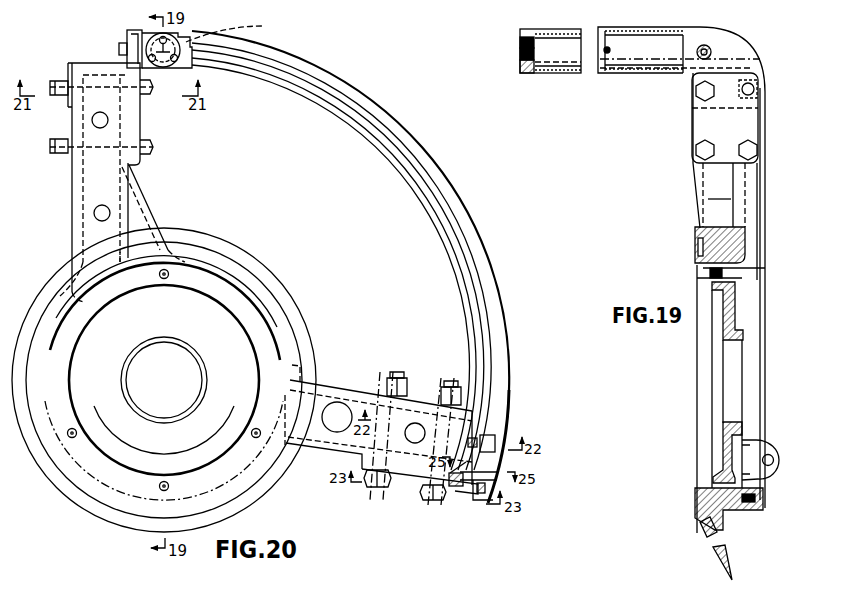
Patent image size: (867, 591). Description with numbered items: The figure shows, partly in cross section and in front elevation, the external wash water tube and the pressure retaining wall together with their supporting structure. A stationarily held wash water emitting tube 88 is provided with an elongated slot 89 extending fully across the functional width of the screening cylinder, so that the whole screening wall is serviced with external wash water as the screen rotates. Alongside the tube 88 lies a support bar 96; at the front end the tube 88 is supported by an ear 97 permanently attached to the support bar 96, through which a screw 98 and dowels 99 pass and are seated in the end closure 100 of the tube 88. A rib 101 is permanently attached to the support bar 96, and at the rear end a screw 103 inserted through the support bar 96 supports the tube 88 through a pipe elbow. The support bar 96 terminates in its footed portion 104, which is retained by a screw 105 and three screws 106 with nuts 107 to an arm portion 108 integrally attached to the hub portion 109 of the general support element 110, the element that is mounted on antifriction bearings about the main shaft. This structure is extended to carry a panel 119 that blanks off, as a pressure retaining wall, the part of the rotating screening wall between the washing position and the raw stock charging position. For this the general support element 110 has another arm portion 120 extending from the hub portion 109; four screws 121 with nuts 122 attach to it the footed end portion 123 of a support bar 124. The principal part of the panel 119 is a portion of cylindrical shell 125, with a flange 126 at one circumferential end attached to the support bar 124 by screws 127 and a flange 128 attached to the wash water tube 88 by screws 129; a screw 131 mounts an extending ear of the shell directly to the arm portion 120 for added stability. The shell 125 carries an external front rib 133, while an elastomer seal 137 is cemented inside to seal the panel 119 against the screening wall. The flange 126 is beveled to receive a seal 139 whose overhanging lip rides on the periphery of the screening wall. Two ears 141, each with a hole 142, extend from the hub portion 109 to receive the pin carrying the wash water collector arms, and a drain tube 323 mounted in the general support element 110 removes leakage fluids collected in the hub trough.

In FIG. 19, the wash water emitting tube 88 is at (560, 29).
In FIG. 19, the elongated slot 89 is at (633, 73).
In FIG. 20, the support bar 96 is at (123, 41).
In FIG. 19, the support bar 96 is at (673, 28).
In FIG. 20, the ear 97 is at (130, 40).
In FIG. 19, the ear 97 is at (520, 66).
In FIG. 20, the screw 98 is at (150, 62).
In FIG. 19, the screw 98 is at (520, 53).
In FIG. 20, the dowels 99 is at (170, 60).
In FIG. 19, the dowels 99 is at (520, 40).
In FIG. 19, the end closure 100 is at (548, 66).
In FIG. 20, the rib 101 is at (92, 62).
In FIG. 19, the screw 103 is at (705, 45).
In FIG. 20, the footed portion 104 is at (140, 131).
In FIG. 19, the footed portion 104 is at (707, 128).
In FIG. 19, the screw 105 is at (754, 86).
In FIG. 20, the screws 106 is at (142, 96).
In FIG. 19, the screws 106 is at (748, 140).
In FIG. 20, the nuts 107 is at (62, 99).
In FIG. 20, the arm portion 108 is at (72, 227).
In FIG. 19, the arm portion 108 is at (734, 226).
In FIG. 20, the hub portion 109 is at (245, 257).
In FIG. 19, the hub portion 109 is at (697, 241).
In FIG. 20, the general support element 110 is at (157, 205).
In FIG. 19, the general support element 110 is at (692, 194).
In FIG. 20, the panel 119 is at (322, 66).
In FIG. 20, the arm portion 120 is at (336, 386).
In FIG. 20, the screws 121 is at (398, 372).
In FIG. 20, the nuts 122 is at (447, 384).
In FIG. 20, the footed end portion 123 is at (370, 487).
In FIG. 20, the support bar 124 is at (453, 493).
In FIG. 20, the cylindrical shell 125 is at (481, 293).
In FIG. 20, the flange 126 is at (505, 482).
In FIG. 20, the screws 127 is at (500, 468).
In FIG. 20, the flange 128 is at (176, 36).
In FIG. 20, the screws 129 is at (237, 30).
In FIG. 20, the screw 131 is at (495, 440).
In FIG. 20, the front rib 133 is at (509, 372).
In FIG. 20, the seal 137 is at (445, 247).
In FIG. 20, the seal 139 is at (458, 486).
In FIG. 19, the ears 141 is at (768, 470).
In FIG. 19, the hole 142 is at (770, 454).
In FIG. 19, the drain tube 323 is at (735, 562).